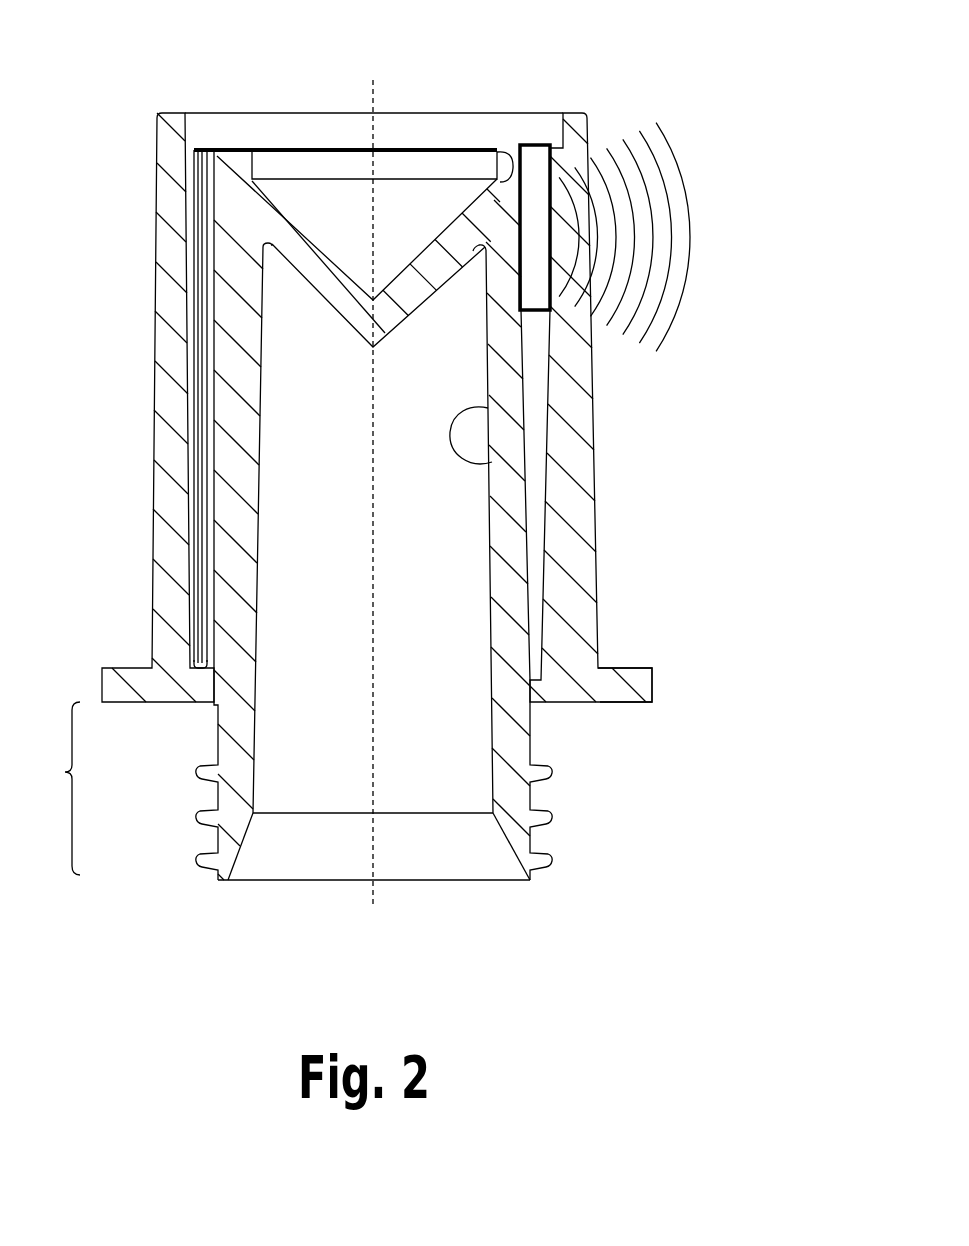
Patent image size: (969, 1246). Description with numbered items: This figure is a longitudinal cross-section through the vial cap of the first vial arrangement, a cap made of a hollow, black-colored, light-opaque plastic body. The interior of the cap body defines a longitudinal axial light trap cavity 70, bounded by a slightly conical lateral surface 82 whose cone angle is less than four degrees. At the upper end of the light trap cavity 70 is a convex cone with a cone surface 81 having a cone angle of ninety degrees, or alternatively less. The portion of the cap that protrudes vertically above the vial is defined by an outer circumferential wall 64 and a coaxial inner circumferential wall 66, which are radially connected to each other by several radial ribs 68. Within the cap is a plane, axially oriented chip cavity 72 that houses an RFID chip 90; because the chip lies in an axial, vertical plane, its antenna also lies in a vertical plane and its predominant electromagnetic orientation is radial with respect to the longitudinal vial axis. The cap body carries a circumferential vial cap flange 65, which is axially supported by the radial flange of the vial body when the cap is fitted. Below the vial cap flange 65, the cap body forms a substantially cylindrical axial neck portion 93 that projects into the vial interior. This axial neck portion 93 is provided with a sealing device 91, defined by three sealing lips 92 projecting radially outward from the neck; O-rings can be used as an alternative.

The outer circumferential wall 64 is at (170, 104).
The vial cap flange 65 is at (622, 680).
The inner circumferential wall 66 is at (235, 140).
The radial ribs 68 is at (208, 185).
The light trap cavity 70 is at (437, 880).
The chip cavity 72 is at (546, 217).
The cone surface 81 is at (427, 295).
The conical lateral surface 82 is at (492, 462).
The RFID chip 90 is at (533, 163).
The sealing device 91 is at (552, 890).
The sealing lips 92 is at (553, 773).
The axial neck portion 93 is at (45, 788).